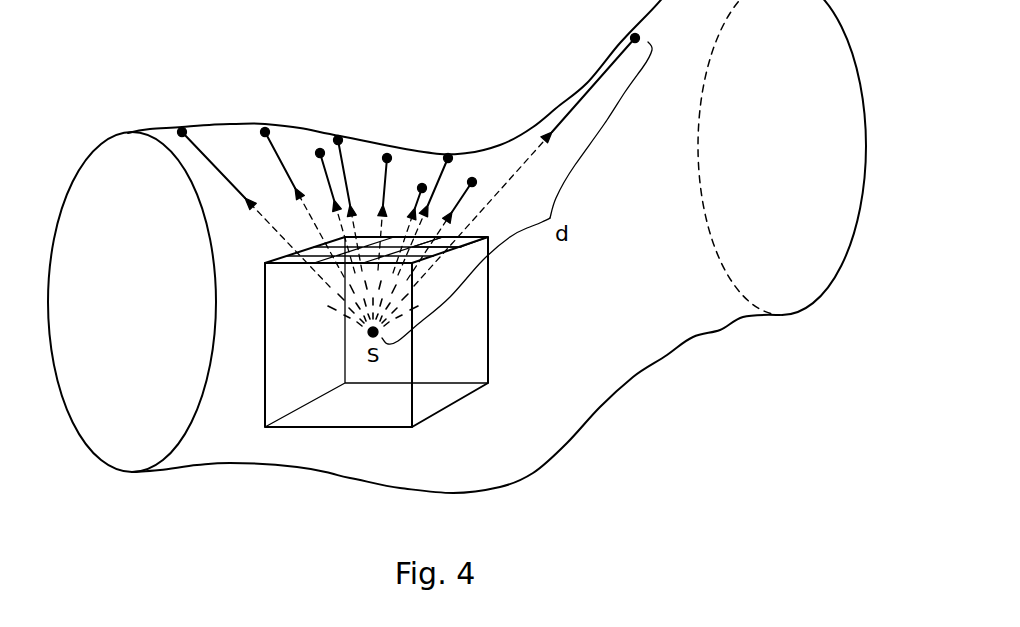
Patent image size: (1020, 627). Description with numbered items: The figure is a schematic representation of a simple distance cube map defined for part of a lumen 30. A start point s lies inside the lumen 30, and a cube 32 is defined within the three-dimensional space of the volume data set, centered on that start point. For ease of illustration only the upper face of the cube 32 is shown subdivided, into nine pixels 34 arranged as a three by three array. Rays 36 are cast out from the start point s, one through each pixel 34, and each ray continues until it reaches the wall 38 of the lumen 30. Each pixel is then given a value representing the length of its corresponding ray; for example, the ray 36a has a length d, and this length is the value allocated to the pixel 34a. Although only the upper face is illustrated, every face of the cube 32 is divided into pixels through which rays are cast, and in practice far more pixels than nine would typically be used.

The lumen 30 is at (627, 370).
The cube 32 is at (488, 363).
The pixels 34 is at (290, 263).
The pixel 34a is at (468, 243).
The rays 36 is at (189, 139).
The ray 36a is at (591, 85).
The wall 38 is at (389, 180).